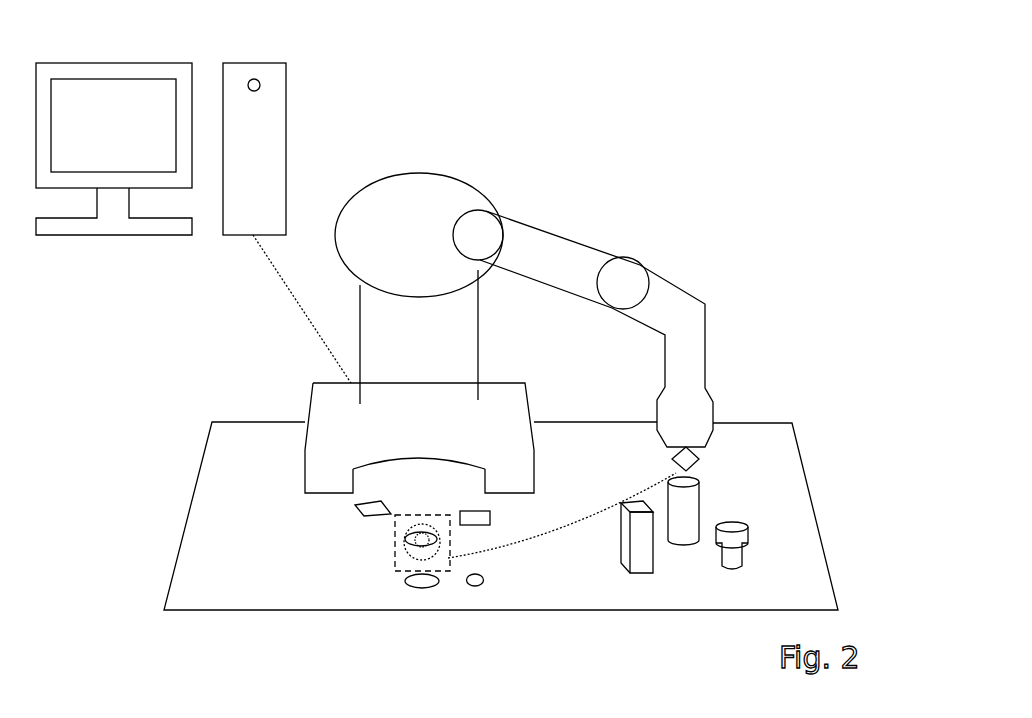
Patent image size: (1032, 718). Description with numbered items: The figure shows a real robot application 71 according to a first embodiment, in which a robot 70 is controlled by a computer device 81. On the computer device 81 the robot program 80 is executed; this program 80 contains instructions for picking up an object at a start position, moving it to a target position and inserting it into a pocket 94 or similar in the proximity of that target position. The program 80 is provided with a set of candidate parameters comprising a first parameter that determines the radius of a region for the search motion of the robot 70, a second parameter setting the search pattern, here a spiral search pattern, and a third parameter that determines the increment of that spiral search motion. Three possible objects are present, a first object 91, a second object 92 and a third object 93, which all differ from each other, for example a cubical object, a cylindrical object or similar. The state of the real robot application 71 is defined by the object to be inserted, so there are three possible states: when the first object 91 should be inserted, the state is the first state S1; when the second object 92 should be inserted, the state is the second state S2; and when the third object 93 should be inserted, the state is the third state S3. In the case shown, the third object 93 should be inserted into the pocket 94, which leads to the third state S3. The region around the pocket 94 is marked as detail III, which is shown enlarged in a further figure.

The robot 70 is at (560, 235).
The real robot application 71 is at (796, 164).
The robot program 80 is at (279, 84).
The computer device 81 is at (122, 277).
The first object 91 is at (700, 510).
The second object 92 is at (742, 560).
The third object 93 is at (653, 568).
The pocket 94 is at (407, 542).
The first state S1 is at (733, 465).
The second state S2 is at (775, 541).
The third state S3 is at (624, 596).
The detail region III is at (395, 569).